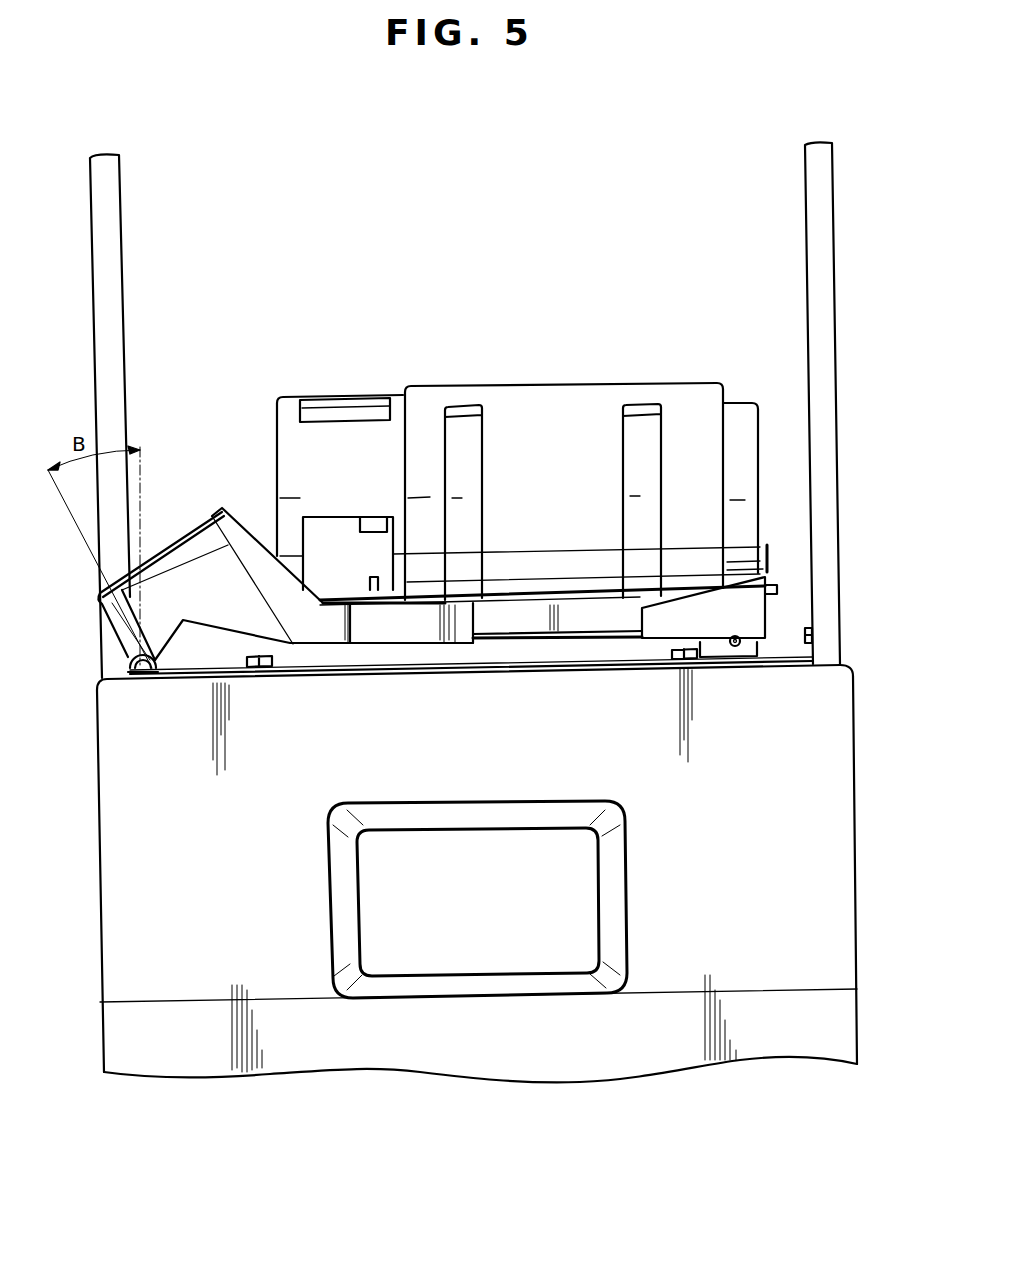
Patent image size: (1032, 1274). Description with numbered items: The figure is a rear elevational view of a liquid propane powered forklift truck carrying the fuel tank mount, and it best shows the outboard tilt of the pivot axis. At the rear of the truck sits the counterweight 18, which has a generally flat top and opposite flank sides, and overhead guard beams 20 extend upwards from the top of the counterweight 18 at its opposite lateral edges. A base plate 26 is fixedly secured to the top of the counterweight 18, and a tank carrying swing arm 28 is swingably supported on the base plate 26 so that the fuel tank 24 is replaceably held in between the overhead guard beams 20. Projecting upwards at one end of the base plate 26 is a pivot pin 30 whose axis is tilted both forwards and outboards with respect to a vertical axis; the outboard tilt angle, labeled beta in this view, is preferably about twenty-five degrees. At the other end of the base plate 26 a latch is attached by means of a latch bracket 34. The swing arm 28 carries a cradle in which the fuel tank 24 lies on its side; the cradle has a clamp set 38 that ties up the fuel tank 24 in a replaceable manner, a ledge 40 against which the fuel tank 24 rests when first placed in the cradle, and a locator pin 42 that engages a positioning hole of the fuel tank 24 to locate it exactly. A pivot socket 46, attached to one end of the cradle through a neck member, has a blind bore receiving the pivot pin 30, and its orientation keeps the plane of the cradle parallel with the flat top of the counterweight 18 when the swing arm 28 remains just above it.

The counterweight 18 is at (198, 988).
The overhead guard beams 20 is at (115, 247).
The fuel tank 24 is at (548, 395).
The base plate 26 is at (175, 677).
The tank carrying swing arm 28 is at (235, 527).
The pivot pin 30 is at (130, 668).
The latch bracket 34 is at (747, 645).
The clamp set 38 is at (462, 425).
The ledge 40 is at (770, 548).
The locator pin 42 is at (370, 583).
The pivot socket 46 is at (115, 623).